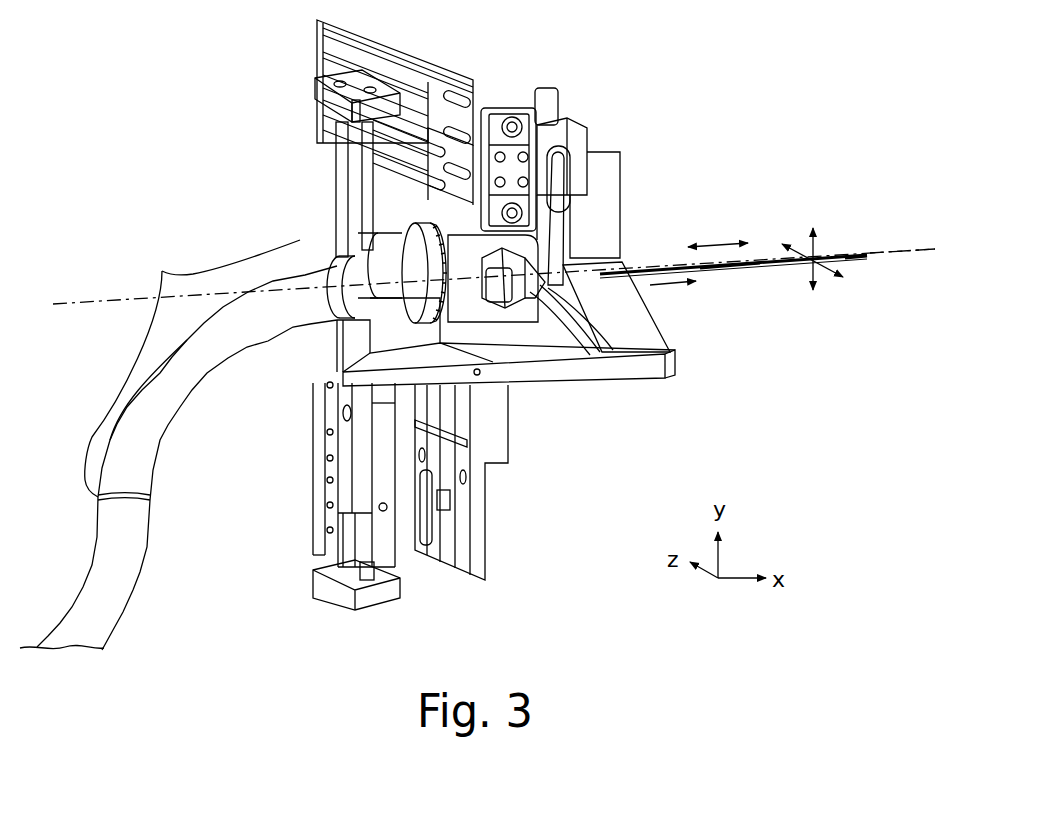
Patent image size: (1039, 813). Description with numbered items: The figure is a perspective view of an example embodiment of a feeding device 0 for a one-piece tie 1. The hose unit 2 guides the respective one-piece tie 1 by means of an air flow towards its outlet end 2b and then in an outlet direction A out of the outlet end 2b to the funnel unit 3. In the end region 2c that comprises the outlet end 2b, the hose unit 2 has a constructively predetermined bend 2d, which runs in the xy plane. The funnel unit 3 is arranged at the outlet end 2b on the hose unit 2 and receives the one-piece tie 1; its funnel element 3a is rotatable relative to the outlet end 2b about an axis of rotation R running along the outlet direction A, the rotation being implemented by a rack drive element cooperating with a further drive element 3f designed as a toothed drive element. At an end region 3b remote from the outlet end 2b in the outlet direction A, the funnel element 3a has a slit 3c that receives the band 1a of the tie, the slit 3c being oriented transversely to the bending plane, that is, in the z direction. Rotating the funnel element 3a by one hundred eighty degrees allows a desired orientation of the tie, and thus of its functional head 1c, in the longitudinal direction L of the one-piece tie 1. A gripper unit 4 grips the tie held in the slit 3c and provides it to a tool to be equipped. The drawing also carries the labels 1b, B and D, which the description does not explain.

The feeding device 0 is at (250, 188).
The one-piece tie 1 is at (643, 259).
The band 1a is at (737, 269).
The wire tip 1b is at (862, 255).
The functional head 1c is at (560, 391).
The hose unit 2 is at (154, 564).
The outlet end 2b is at (383, 233).
The end region 2c is at (162, 272).
The constructively predetermined bend 2d is at (202, 384).
The funnel unit 3 is at (520, 386).
The funnel element 3a is at (475, 244).
The end region 3b is at (572, 389).
The slit 3c is at (622, 386).
The further drive element 3f is at (385, 242).
The gripper unit 4 is at (543, 284).
The outlet direction A is at (678, 286).
The transverse direction B is at (833, 276).
The vertical direction D is at (822, 233).
The longitudinal direction L is at (718, 240).
The axis of rotation R is at (895, 258).